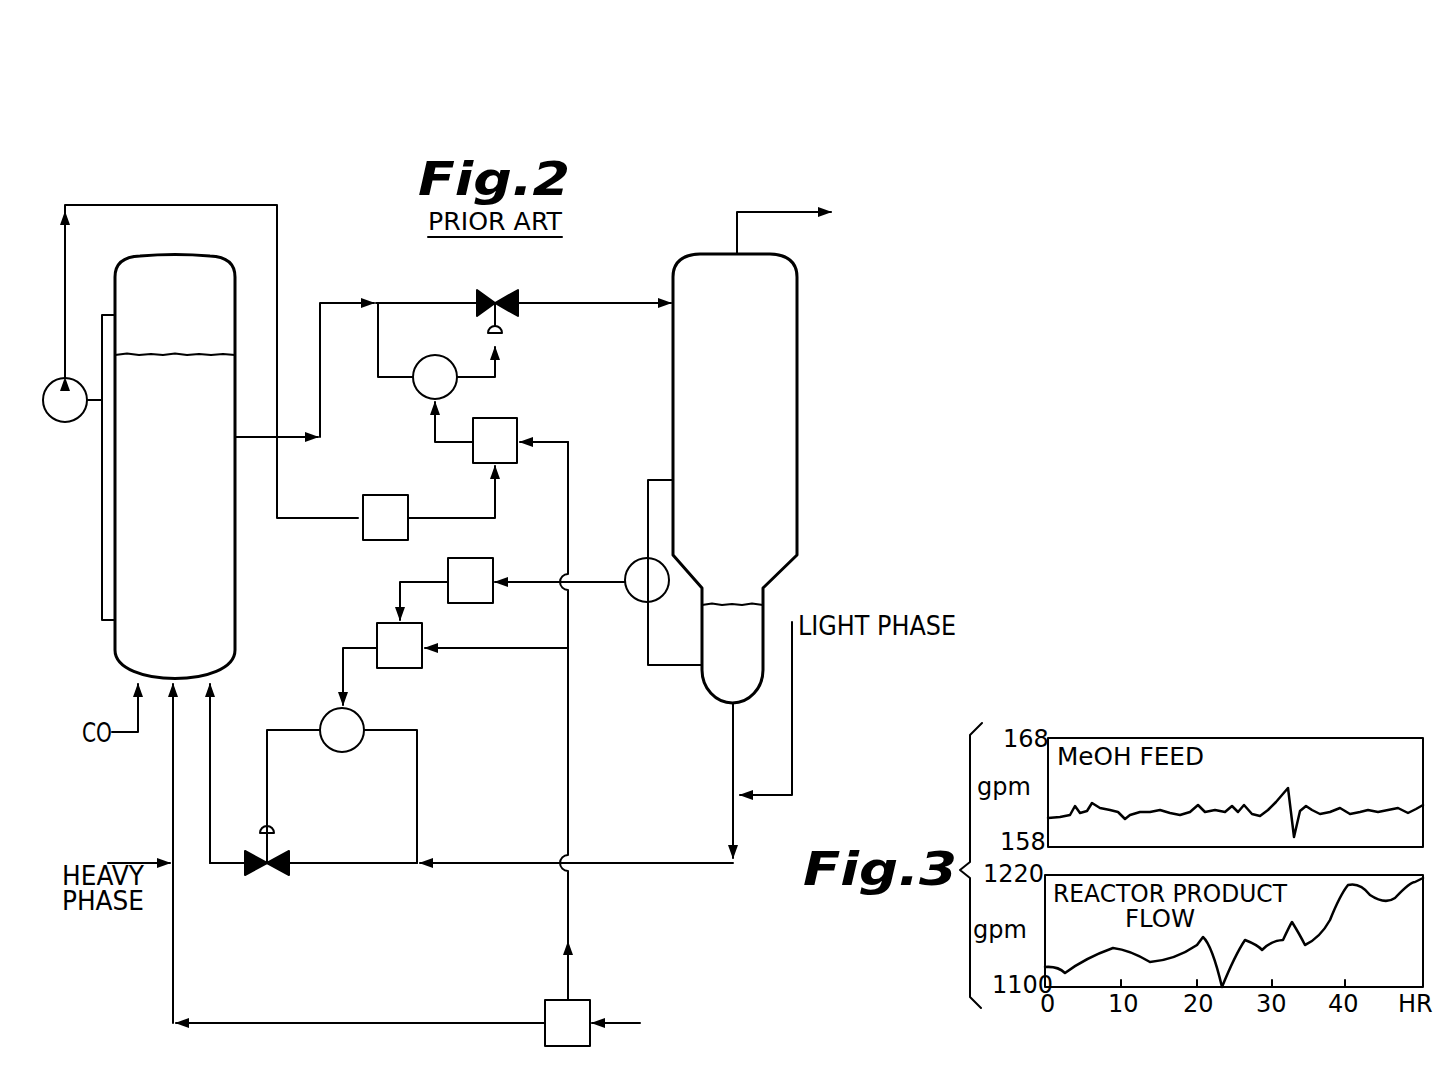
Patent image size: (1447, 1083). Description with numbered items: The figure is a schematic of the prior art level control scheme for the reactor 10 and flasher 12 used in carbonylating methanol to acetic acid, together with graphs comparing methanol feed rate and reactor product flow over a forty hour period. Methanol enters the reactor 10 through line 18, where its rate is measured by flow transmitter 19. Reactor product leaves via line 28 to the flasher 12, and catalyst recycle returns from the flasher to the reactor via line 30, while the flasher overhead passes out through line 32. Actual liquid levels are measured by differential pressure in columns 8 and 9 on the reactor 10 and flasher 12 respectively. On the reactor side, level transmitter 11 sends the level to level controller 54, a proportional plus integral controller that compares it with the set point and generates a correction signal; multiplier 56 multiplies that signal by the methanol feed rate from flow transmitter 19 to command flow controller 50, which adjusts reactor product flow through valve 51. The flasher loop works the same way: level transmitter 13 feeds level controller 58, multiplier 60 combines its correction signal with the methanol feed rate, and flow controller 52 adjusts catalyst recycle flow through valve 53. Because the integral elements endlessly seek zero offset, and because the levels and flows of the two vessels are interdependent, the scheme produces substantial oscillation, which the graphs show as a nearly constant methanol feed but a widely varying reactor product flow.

The differential pressure measurement column 8 is at (102, 575).
The differential pressure measurement column 9 is at (645, 518).
The reactor 10 is at (235, 592).
The level transmitter 11 is at (70, 422).
The flasher 12 is at (797, 420).
The level transmitter 13 is at (633, 600).
The methanol feed line 18 is at (393, 1022).
The flow transmitter 19 is at (545, 1000).
The reactor product line 28 is at (255, 437).
The catalyst recycle line 30 is at (522, 862).
The flasher overhead line to splitter column 32 is at (737, 226).
The flow controller 50 is at (430, 356).
The valve 51 is at (505, 293).
The flow controller 52 is at (357, 750).
The valve 53 is at (272, 876).
The level controller 54 is at (405, 496).
The multiplier 56 is at (517, 430).
The level controller 58 is at (492, 560).
The multiplier 60 is at (422, 665).